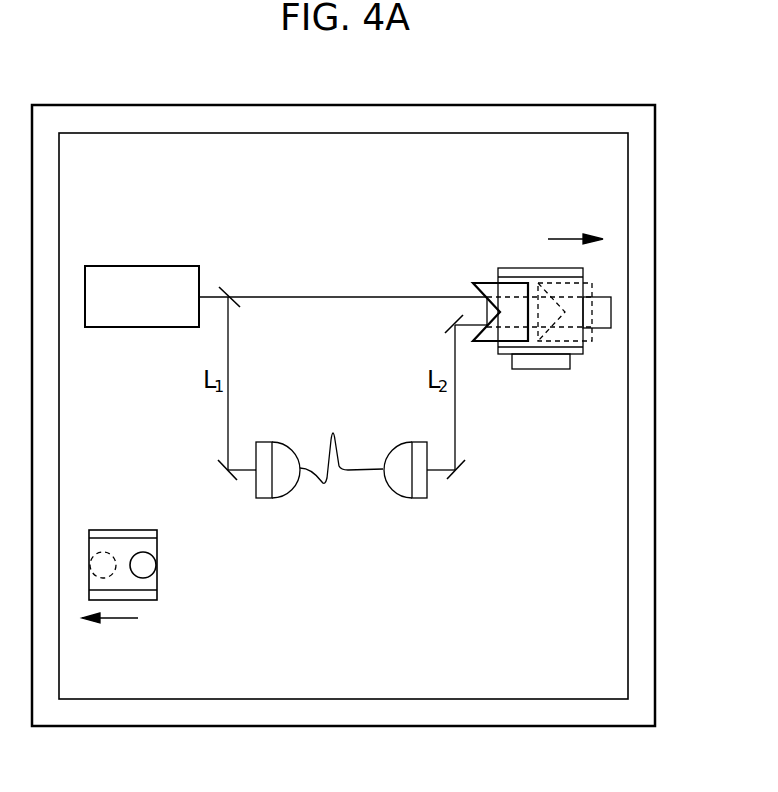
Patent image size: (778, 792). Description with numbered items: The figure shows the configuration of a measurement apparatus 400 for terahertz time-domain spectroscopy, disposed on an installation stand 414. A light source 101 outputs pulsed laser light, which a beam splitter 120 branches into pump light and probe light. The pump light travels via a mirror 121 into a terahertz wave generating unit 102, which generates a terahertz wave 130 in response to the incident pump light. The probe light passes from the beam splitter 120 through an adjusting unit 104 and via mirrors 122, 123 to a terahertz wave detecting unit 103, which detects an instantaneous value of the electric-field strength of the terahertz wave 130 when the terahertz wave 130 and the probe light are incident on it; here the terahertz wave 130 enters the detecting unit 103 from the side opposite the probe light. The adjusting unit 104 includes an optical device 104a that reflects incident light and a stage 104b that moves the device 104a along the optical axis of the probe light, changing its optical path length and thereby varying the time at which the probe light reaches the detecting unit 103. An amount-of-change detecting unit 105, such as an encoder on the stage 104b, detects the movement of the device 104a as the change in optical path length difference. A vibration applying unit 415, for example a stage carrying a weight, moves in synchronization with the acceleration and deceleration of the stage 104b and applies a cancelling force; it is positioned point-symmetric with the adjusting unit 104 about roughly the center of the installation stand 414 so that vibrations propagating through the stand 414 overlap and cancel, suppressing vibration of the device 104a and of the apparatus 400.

The measurement apparatus 400 is at (478, 73).
The installation stand 414 is at (87, 105).
The light source 101 is at (120, 266).
The beam splitter 120 is at (225, 290).
The mirror 121 is at (216, 463).
The mirror 122 is at (466, 461).
The mirror 123 is at (447, 323).
The terahertz wave generating unit 102 is at (263, 498).
The terahertz wave detecting unit 103 is at (416, 490).
The terahertz wave pulse 130 is at (338, 440).
The adjusting unit 104 is at (528, 250).
The optical device 104a is at (483, 280).
The moving unit (stage) 104b is at (542, 268).
The amount-of-change detecting unit 105 is at (553, 369).
The vibration applying unit 415 is at (158, 596).